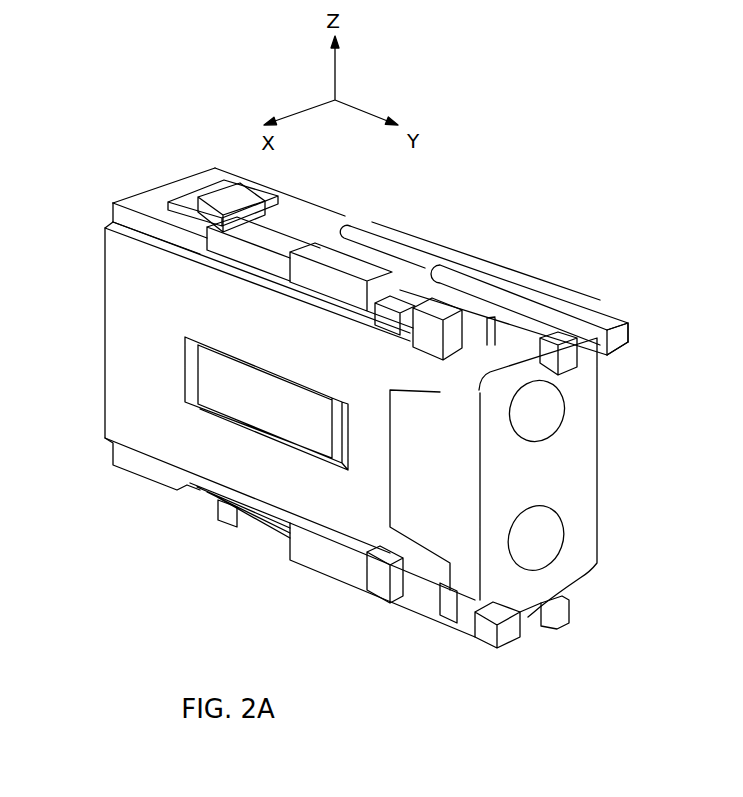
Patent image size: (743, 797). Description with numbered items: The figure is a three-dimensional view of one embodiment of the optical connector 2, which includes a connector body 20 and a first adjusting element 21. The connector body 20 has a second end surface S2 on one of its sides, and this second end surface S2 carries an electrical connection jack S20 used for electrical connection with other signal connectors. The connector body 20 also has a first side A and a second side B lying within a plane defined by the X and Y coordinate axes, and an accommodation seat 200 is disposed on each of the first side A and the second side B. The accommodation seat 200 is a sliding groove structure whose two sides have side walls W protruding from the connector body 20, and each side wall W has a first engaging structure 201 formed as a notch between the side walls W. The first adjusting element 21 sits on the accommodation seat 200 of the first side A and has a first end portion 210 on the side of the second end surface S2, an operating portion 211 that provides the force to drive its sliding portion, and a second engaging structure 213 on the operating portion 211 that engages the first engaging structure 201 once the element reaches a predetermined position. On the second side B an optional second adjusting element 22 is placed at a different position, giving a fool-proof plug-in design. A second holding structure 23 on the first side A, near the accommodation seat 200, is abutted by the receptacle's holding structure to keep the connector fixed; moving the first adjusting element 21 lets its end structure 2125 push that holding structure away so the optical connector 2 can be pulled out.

The optical connector 2 is at (175, 108).
The connector body 20 is at (112, 190).
The first adjusting element 21 is at (556, 270).
The second adjusting element 22 is at (575, 625).
The second holding structure 23 is at (237, 197).
The accommodation seat 200 is at (302, 243).
The first engaging structure 201 is at (358, 308).
The first end portion 210 is at (633, 340).
The operating portion 211 is at (625, 355).
The second engaging structure 213 is at (527, 280).
The end structure 2125 is at (362, 228).
The first side A is at (300, 222).
The second side B is at (210, 485).
The second end surface S2 is at (585, 466).
The electrical connection jack S20 is at (565, 410).
The side wall W is at (320, 283).